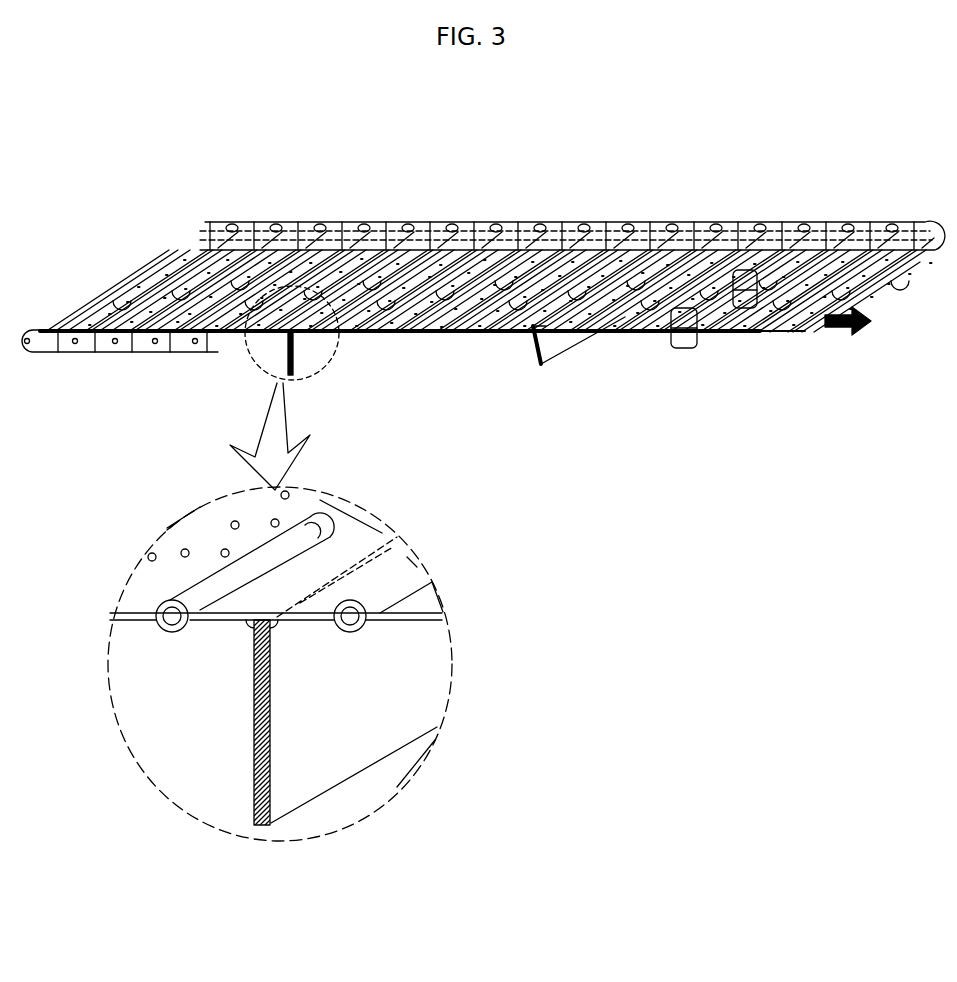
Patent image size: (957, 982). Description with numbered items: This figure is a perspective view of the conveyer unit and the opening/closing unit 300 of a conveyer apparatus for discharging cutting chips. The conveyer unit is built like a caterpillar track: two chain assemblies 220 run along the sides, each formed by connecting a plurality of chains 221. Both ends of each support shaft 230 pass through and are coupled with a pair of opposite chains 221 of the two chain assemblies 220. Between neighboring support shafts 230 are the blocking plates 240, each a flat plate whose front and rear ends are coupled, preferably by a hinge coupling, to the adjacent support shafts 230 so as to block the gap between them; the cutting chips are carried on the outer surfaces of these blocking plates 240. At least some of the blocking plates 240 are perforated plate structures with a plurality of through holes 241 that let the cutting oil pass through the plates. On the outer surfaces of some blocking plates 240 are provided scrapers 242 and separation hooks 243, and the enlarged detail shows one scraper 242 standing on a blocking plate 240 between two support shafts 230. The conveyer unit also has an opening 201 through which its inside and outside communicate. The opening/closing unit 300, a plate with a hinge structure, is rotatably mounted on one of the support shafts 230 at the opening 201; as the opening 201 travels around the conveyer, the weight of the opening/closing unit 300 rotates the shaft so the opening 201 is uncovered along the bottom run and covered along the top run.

The chain assembly 220 is at (481, 201).
The chain 221 is at (149, 347).
The opening 201 is at (513, 332).
The scraper 242 is at (347, 340).
The opening/closing unit 300 is at (570, 375).
The separation hook 243 is at (687, 347).
The blocking plate 240 is at (138, 593).
The through hole 241 is at (372, 560).
The support shaft 230 is at (172, 620).